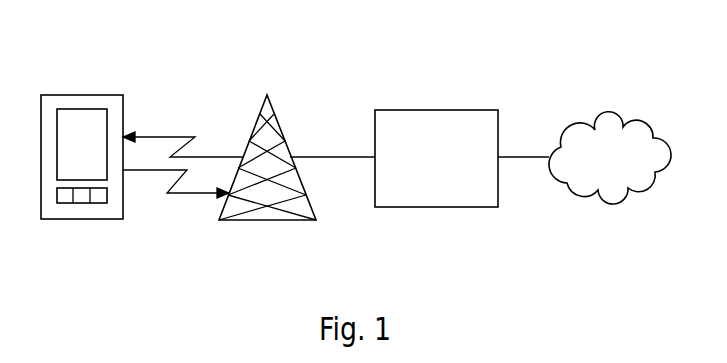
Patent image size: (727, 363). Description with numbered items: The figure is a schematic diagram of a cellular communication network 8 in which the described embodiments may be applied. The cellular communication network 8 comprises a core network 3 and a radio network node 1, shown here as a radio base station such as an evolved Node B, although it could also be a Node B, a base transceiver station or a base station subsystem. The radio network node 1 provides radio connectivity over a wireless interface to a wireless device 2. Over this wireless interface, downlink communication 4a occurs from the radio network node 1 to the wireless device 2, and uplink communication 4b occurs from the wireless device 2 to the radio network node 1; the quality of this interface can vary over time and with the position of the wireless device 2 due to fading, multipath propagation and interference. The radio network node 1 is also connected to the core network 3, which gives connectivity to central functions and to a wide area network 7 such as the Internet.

The radio network node 1 is at (279, 127).
The wireless device 2 is at (87, 95).
The core network 3 is at (436, 158).
The downlink communication 4a is at (170, 136).
The uplink communication 4b is at (182, 196).
The wide area network 7 is at (610, 158).
The cellular communication network 8 is at (632, 90).